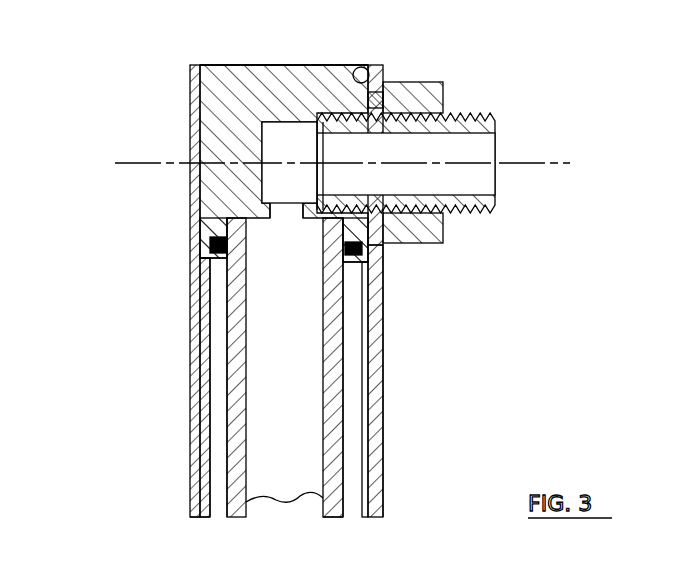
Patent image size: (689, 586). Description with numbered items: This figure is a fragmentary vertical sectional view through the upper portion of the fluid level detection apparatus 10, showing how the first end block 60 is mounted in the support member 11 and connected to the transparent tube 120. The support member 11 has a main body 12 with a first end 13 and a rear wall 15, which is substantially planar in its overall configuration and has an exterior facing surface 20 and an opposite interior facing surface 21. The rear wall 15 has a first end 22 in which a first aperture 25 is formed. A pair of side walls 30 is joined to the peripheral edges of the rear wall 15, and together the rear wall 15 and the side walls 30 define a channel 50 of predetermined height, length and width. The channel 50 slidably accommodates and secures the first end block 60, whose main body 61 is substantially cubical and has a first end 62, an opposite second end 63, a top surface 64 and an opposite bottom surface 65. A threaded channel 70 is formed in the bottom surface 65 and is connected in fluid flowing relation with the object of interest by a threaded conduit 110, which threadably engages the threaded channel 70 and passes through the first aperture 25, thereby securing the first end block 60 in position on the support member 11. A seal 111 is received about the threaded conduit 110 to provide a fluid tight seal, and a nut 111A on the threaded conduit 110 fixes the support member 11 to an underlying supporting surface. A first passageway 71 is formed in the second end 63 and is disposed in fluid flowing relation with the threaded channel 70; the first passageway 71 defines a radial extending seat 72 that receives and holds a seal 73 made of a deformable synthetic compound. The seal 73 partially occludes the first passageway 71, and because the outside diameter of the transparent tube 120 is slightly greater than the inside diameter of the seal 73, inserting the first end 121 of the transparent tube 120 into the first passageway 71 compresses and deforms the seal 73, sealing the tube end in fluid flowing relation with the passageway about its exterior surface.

The fluid level detection apparatus 10 is at (130, 347).
The support member 11 is at (410, 397).
The main body 12 is at (385, 468).
The first end 13 is at (377, 288).
The rear wall 15 is at (385, 432).
The exterior facing surface 20 is at (383, 365).
The interior facing surface 21 is at (345, 512).
The first end 22 is at (377, 312).
The first aperture 25 is at (385, 80).
The pair of side walls 30 is at (168, 383).
The channel 50 is at (217, 502).
The first end block 60 is at (259, 52).
The main body 61 is at (298, 80).
The first end 62 is at (268, 65).
The second end 63 is at (200, 303).
The top surface 64 is at (200, 100).
The bottom surface 65 is at (356, 67).
The threaded channel 70 is at (292, 146).
The first passageway 71 is at (276, 268).
The radial extending seat 72 is at (200, 225).
The seal 73 is at (362, 250).
The threaded conduit 110 is at (490, 118).
The seal 111 is at (440, 229).
The nut 111A is at (437, 82).
The transparent tube 120 is at (222, 437).
The first end 121 is at (213, 314).